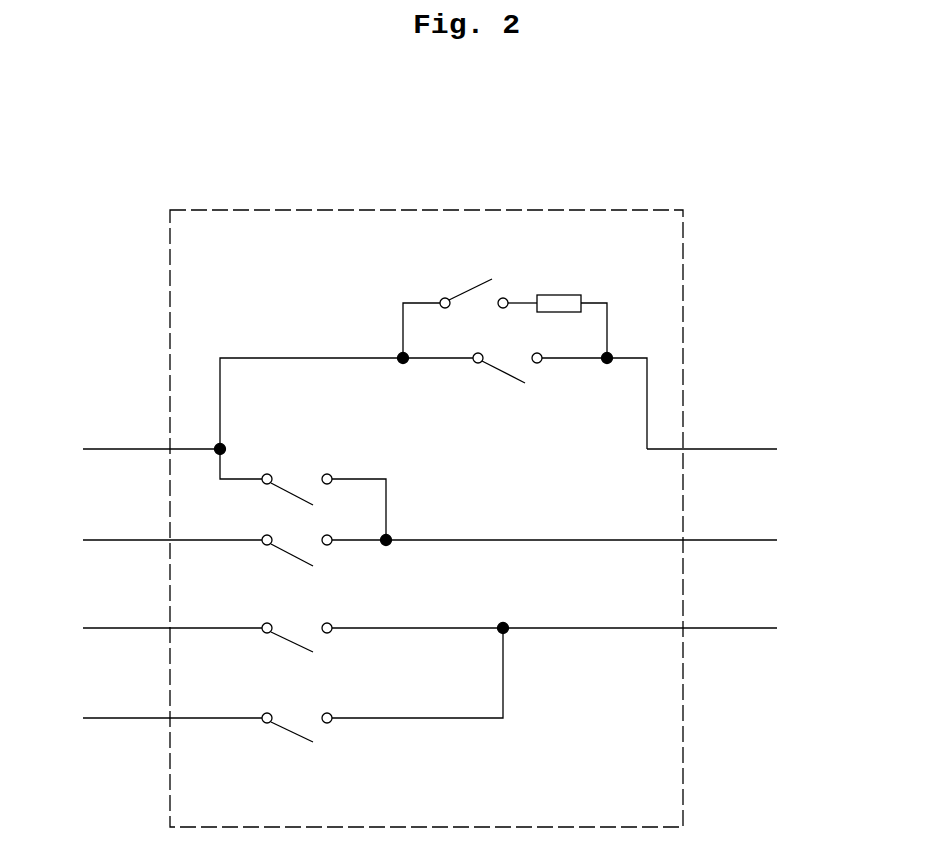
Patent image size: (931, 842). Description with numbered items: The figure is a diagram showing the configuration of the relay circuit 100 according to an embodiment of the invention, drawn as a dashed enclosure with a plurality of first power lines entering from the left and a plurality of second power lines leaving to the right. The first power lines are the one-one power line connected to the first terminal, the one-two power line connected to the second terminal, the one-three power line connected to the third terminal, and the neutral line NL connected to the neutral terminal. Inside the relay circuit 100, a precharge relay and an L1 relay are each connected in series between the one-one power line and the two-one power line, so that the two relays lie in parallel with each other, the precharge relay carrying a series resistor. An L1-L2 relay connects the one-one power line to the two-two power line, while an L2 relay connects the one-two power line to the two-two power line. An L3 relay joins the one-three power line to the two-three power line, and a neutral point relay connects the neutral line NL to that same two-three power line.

The relay circuit 100 is at (615, 210).
The neutral line NL is at (130, 718).